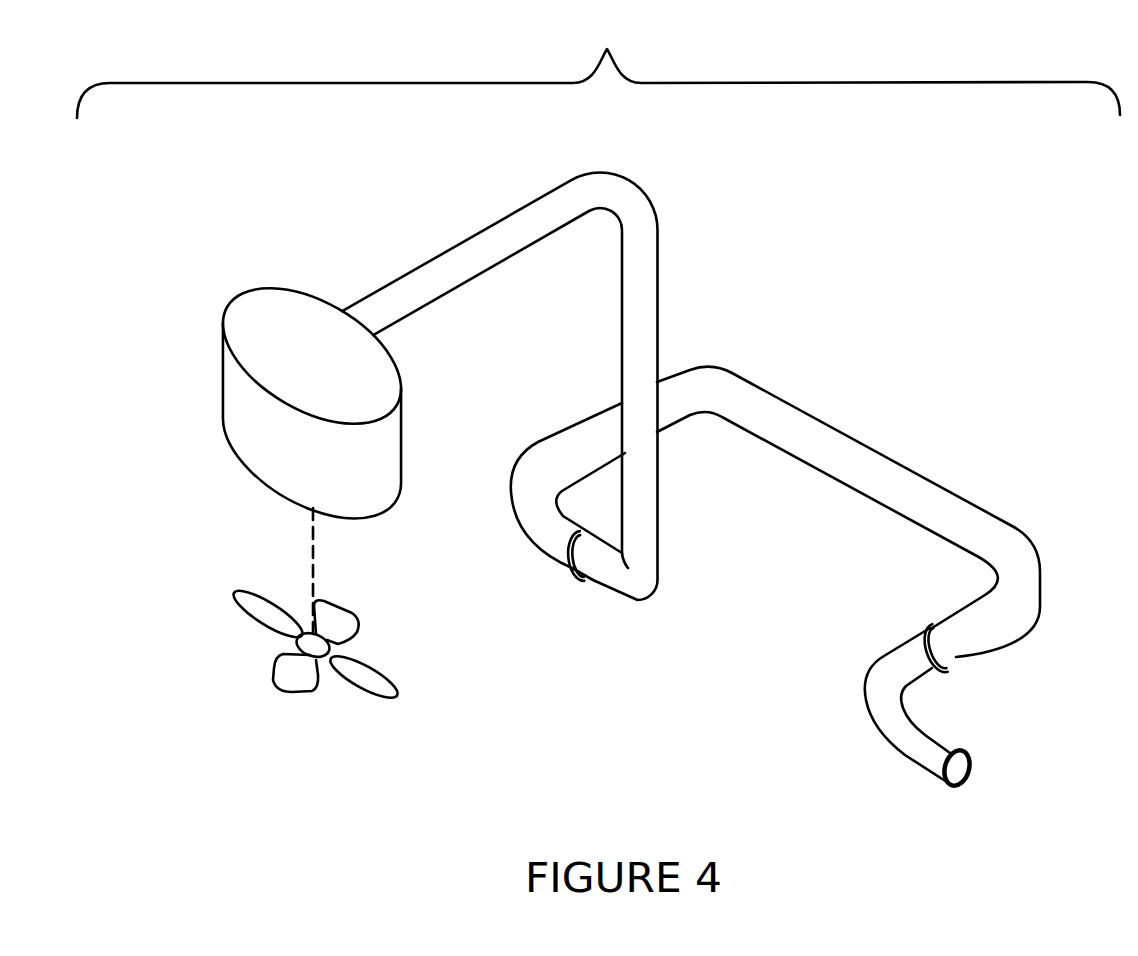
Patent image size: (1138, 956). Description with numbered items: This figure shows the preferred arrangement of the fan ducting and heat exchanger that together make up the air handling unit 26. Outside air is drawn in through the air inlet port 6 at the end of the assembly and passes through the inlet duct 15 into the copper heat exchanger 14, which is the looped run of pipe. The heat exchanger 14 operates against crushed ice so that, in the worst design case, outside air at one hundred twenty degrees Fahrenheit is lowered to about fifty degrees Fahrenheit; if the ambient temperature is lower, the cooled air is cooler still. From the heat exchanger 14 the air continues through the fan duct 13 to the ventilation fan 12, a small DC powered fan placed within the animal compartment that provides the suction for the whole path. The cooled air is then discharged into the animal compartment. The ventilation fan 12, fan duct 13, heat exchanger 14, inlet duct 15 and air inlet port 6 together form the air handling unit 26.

The air handling unit 26 is at (598, 59).
The ventilation fan 12 is at (252, 588).
The fan duct 13 is at (445, 250).
The heat exchanger 14 is at (887, 453).
The inlet duct 15 is at (905, 697).
The air inlet port 6 is at (970, 773).